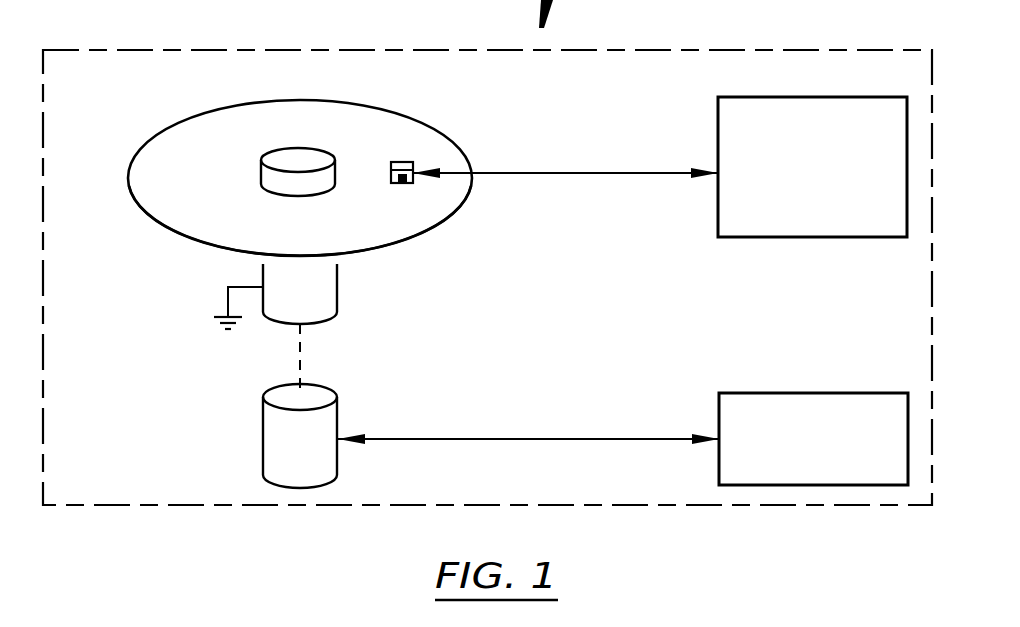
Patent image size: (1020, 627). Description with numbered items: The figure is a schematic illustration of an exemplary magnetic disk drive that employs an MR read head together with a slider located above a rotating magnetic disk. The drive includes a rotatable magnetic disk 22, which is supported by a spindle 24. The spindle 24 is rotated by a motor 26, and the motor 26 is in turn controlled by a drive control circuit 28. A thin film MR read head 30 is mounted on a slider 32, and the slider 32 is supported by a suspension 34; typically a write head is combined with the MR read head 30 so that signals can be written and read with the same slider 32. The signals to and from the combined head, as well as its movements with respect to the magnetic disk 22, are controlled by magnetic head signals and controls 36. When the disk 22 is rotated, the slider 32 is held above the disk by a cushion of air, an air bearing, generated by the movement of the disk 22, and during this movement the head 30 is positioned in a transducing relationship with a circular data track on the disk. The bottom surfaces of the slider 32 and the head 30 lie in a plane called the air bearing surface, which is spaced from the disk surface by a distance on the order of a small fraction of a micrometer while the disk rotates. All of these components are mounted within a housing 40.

The housing 40 is at (215, 50).
The rotatable magnetic disk 22 is at (168, 143).
The spindle 24 is at (337, 290).
The motor 26 is at (263, 440).
The drive control circuit 28 is at (823, 393).
The thin film MR read head 30 is at (405, 183).
The slider 32 is at (402, 160).
The suspension 34 is at (560, 173).
The magnetic head signals and controls 36 is at (822, 97).